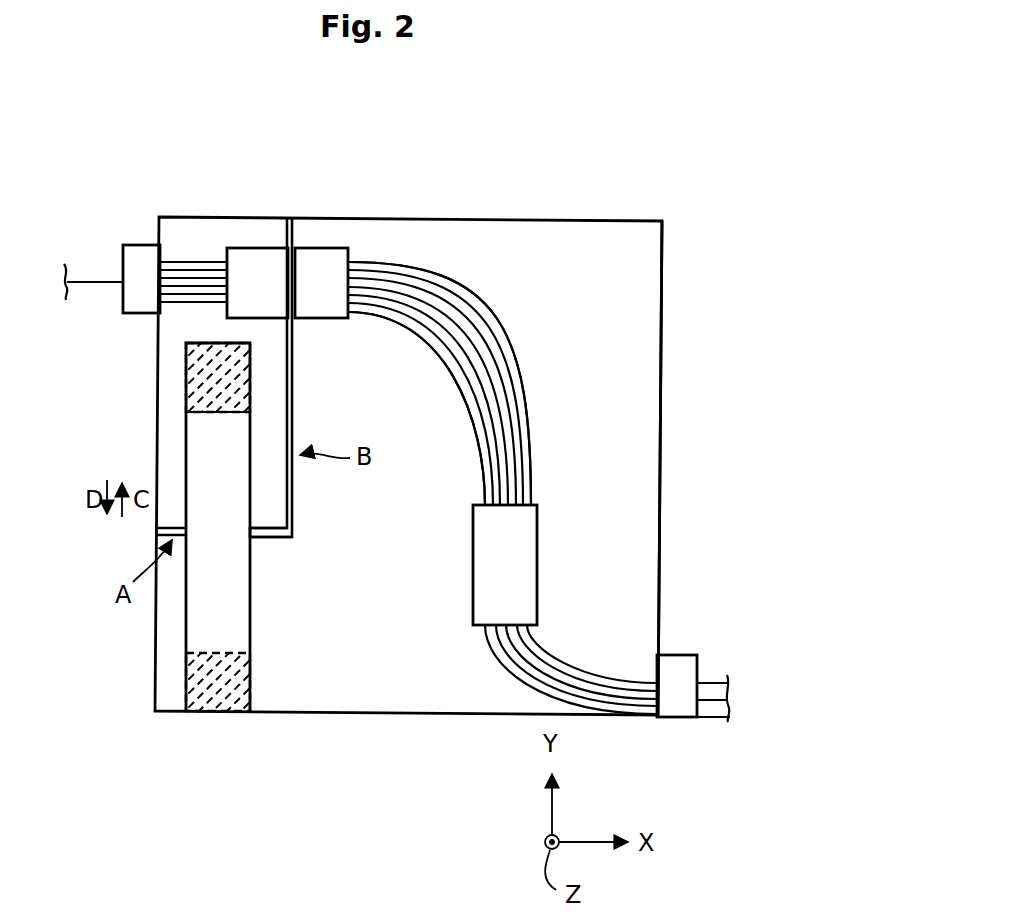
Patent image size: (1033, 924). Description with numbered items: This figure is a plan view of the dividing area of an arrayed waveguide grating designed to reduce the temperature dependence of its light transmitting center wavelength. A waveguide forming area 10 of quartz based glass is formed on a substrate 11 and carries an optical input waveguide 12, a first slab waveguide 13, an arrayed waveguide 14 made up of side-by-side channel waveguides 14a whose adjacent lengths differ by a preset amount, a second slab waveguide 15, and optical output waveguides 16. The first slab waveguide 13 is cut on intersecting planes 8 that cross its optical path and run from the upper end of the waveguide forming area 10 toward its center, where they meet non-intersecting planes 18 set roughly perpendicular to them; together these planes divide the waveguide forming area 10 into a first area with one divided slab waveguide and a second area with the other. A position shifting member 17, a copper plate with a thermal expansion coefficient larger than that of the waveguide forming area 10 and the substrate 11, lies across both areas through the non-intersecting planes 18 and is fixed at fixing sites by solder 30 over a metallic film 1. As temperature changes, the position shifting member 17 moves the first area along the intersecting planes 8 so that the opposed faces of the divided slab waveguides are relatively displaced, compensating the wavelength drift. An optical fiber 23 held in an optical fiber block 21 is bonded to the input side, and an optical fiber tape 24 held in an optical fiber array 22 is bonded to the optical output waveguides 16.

The metallic film 1 is at (242, 398).
The intersecting planes 8 is at (287, 275).
The waveguide forming area 10 is at (170, 387).
The substrate 11 is at (648, 272).
The optical input waveguide 12 is at (193, 282).
The first slab waveguide 13 is at (243, 252).
The arrayed waveguide 14 is at (412, 342).
The channel waveguides 14a is at (483, 307).
The second slab waveguide 15 is at (525, 553).
The optical output waveguides 16 is at (575, 665).
The position shifting member 17 is at (195, 645).
The non-intersecting planes 18 is at (265, 529).
The optical fiber block 21 is at (144, 316).
The optical fiber array 22 is at (670, 663).
The optical fiber 23 is at (95, 287).
The optical fiber tape 24 is at (710, 683).
The solder 30 is at (242, 384).